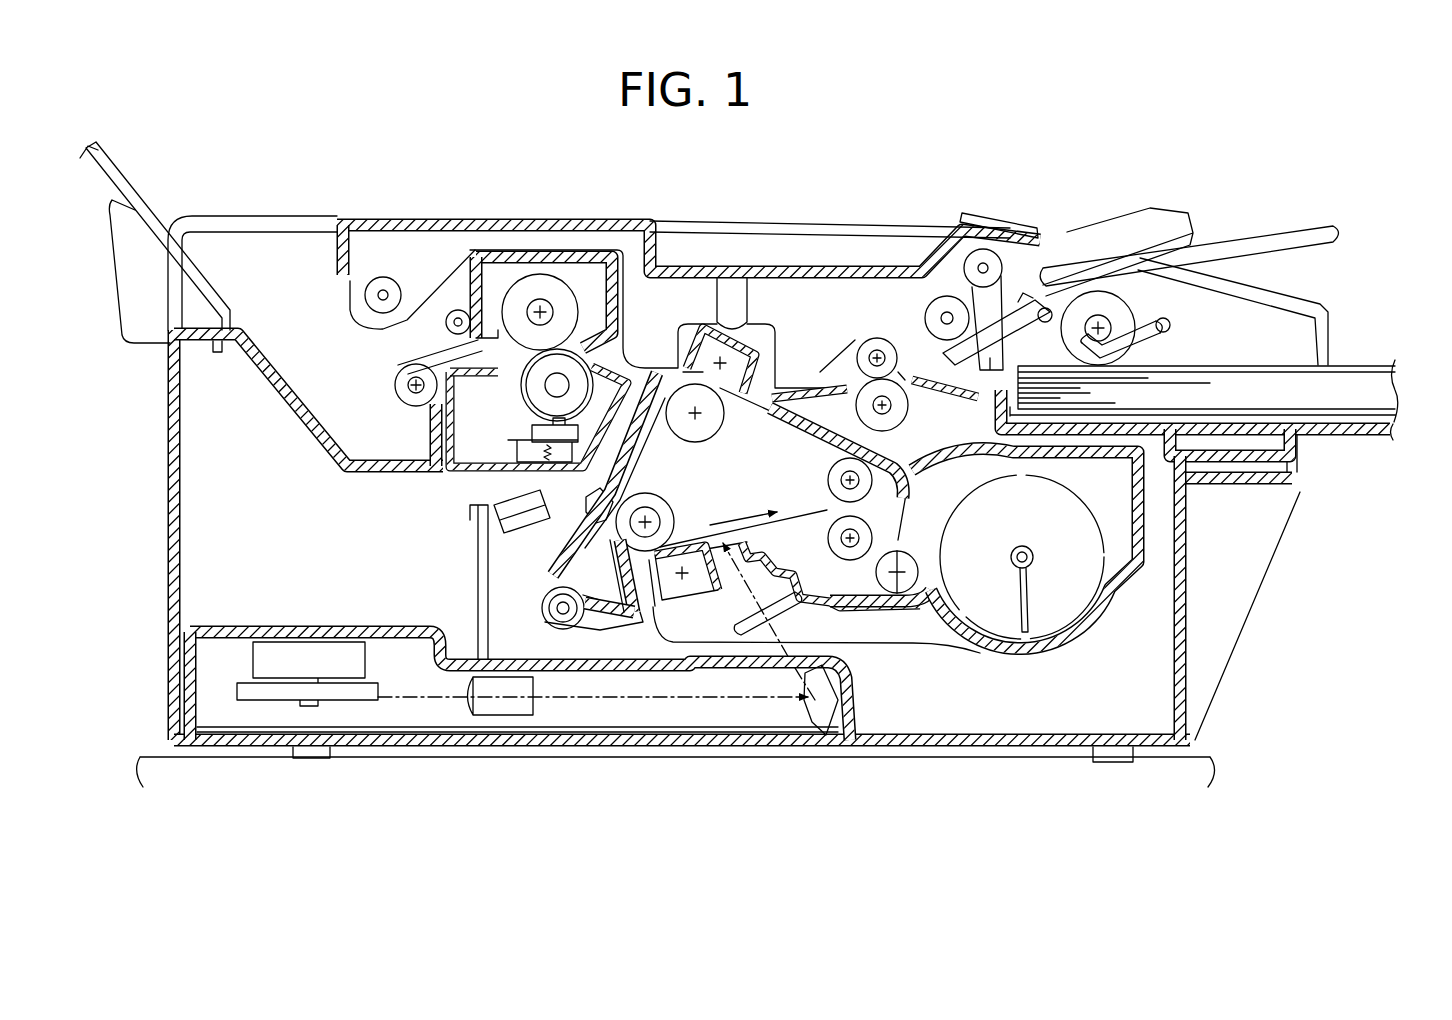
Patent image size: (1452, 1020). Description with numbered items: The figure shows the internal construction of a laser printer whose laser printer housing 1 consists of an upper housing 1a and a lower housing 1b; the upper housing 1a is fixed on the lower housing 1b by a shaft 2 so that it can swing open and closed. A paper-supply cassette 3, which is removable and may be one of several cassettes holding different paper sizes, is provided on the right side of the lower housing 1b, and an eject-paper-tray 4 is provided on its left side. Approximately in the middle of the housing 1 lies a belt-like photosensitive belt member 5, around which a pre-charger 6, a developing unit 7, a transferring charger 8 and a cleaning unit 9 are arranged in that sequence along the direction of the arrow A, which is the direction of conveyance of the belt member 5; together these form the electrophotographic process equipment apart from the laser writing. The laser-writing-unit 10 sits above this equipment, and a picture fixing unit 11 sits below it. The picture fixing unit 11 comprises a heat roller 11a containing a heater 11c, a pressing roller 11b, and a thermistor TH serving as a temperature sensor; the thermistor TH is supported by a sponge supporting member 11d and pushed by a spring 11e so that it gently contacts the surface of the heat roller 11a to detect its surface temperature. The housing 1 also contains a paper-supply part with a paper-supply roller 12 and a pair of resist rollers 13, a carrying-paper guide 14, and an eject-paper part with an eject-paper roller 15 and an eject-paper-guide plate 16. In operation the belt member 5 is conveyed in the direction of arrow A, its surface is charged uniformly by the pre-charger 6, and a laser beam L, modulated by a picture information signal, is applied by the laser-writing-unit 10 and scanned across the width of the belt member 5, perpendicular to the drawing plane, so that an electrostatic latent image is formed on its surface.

The laser printer housing 1 is at (1092, 165).
The upper housing 1a is at (1002, 213).
The lower housing 1b is at (1168, 485).
The shaft 2 is at (386, 277).
The paper-supply cassette 3 is at (1360, 440).
The eject-paper-tray 4 is at (115, 200).
The photosensitive belt member 5 is at (773, 410).
The pre-charger 6 is at (676, 600).
The developing unit 7 is at (1068, 658).
The transferring charger 8 is at (745, 338).
The cleaning unit 9 is at (548, 580).
The laser-writing-unit 10 is at (312, 628).
The picture fixing unit 11 is at (552, 250).
The heat roller 11a is at (522, 400).
The pressing roller 11b is at (552, 308).
The heater 11c is at (552, 382).
The supporting member 11d is at (530, 432).
The spring 11e is at (532, 465).
The paper-supply roller 12 is at (1125, 318).
The pair of resist rollers 13 is at (913, 418).
The carrying-paper guide 14 is at (648, 414).
The eject-paper roller 15 is at (408, 408).
The eject-paper-guide plate 16 is at (302, 410).
The thermistor TH is at (572, 462).
The arrow A is at (732, 518).
The laser beam L is at (664, 700).